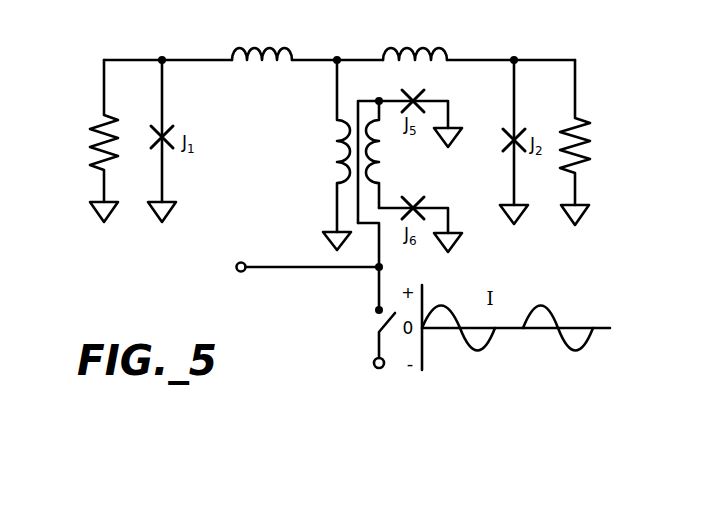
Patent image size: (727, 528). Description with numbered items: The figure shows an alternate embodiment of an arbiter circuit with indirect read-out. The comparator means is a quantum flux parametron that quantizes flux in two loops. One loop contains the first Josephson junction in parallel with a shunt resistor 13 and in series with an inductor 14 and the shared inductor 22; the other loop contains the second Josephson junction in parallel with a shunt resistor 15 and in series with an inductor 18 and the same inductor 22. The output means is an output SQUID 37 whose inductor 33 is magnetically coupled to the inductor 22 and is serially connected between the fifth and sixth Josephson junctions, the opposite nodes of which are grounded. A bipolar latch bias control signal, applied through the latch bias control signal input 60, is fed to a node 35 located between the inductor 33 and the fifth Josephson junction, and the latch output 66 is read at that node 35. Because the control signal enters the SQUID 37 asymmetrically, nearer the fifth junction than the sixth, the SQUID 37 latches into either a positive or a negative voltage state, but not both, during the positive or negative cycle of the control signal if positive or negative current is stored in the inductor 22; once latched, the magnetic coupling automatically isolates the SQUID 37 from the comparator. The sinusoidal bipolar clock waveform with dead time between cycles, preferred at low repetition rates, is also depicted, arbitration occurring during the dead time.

The shunt resistor 13 is at (96, 156).
The inductor 14 is at (288, 47).
The shunt resistor 15 is at (583, 154).
The inductor 18 is at (446, 50).
The inductor 22 is at (338, 153).
The inductor 33 is at (375, 173).
The node 35 is at (379, 98).
The output SQUID 37 is at (452, 188).
The latch bias control signal input 60 is at (378, 305).
The latch output 66 is at (257, 265).